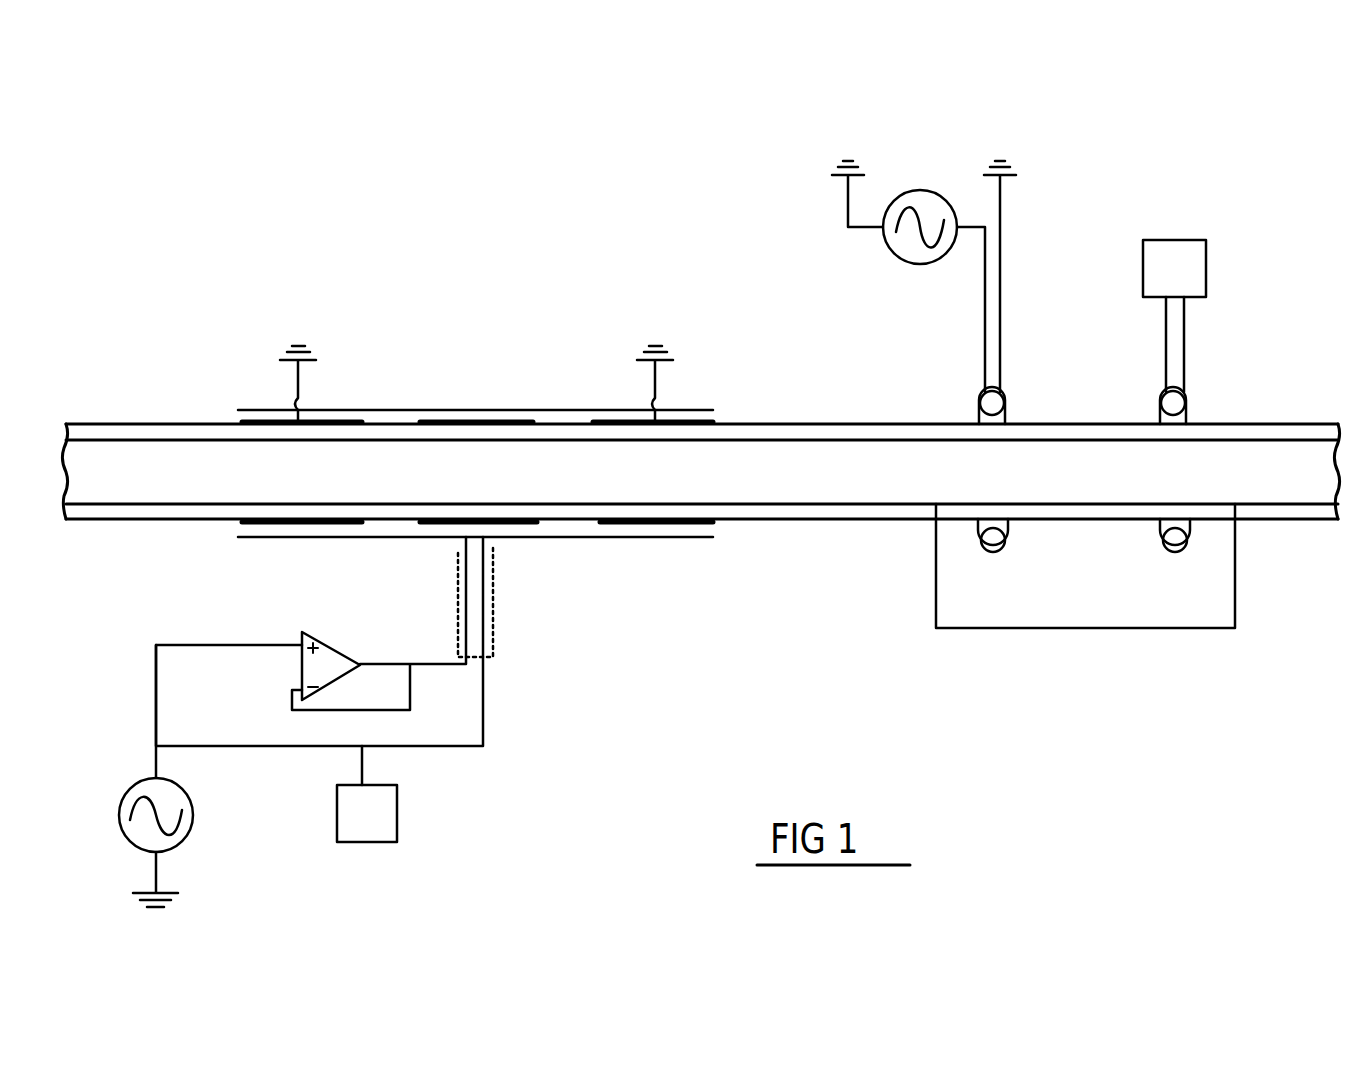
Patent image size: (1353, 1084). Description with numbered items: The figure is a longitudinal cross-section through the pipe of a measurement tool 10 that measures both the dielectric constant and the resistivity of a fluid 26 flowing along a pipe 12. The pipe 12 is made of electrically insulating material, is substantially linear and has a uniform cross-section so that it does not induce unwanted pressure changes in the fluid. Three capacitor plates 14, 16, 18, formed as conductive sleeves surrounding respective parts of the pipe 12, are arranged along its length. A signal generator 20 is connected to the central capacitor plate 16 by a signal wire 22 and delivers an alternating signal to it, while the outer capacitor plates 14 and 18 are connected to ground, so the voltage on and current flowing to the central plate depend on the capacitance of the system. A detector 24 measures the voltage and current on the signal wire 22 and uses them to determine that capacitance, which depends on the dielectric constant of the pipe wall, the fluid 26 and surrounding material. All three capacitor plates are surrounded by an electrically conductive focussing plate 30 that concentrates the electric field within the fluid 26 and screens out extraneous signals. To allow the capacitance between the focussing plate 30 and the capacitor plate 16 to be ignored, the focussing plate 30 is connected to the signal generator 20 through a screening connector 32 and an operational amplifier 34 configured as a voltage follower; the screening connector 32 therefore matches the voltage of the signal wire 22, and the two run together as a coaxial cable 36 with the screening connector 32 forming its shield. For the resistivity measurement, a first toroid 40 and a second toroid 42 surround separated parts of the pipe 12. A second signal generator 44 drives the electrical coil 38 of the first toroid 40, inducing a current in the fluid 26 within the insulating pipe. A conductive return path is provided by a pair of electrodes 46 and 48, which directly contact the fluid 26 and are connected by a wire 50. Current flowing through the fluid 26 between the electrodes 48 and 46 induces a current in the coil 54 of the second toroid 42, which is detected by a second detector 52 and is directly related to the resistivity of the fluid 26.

The measurement tool 10 is at (215, 170).
The pipe 12 is at (104, 424).
The capacitor plate 14 is at (258, 422).
The central capacitor plate 16 is at (436, 422).
The capacitor plate 18 is at (603, 422).
The signal generator 20 is at (193, 815).
The signal wire 22 is at (483, 713).
The detector 24 is at (397, 812).
The fluid 26 is at (188, 494).
The focussing plate 30 is at (697, 410).
The screening connector 32 is at (416, 664).
The operational amplifier 34 is at (305, 669).
The coaxial cable 36 is at (493, 615).
The electrical coil 38 is at (977, 405).
The first toroid 40 is at (980, 395).
The second toroid 42 is at (1180, 397).
The second signal generator 44 is at (918, 191).
The electrode 46 is at (1242, 505).
The electrode 48 is at (930, 508).
The wire 50 is at (1195, 628).
The second detector 52 is at (1196, 240).
The coil 54 is at (1190, 404).